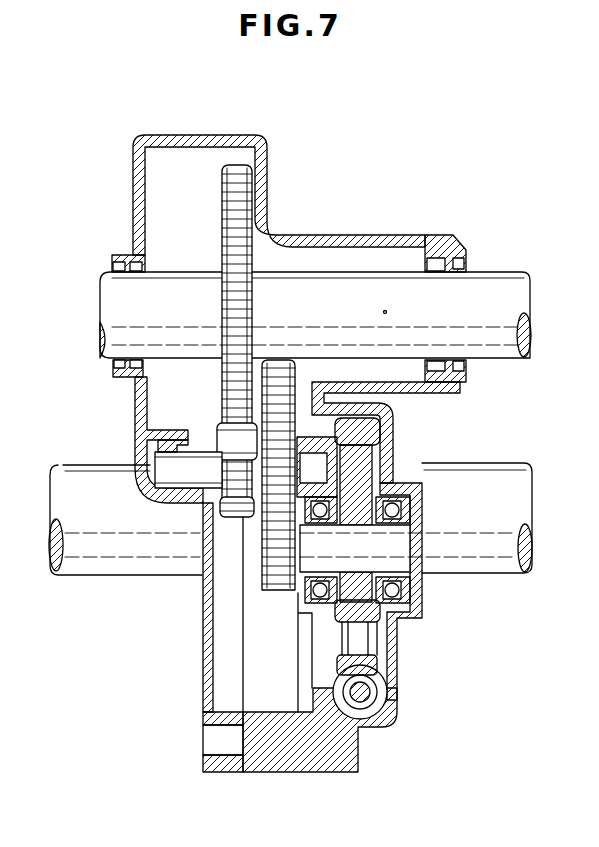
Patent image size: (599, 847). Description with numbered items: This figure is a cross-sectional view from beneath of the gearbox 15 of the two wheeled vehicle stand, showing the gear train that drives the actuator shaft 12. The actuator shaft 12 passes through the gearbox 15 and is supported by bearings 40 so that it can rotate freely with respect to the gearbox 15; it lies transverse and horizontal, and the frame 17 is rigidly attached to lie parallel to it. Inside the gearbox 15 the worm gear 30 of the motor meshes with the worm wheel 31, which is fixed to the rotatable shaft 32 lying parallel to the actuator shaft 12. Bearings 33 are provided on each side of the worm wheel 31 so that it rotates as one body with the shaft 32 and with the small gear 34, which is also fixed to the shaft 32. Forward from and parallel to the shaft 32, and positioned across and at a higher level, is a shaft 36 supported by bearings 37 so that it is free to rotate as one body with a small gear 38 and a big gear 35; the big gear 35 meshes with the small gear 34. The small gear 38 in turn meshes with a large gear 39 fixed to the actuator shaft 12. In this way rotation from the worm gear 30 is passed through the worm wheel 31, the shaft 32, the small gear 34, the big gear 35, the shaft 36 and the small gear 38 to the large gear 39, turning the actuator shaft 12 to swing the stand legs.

The actuator shaft 12 is at (351, 290).
The gearbox 15 is at (214, 135).
The frame 17 is at (500, 463).
The worm gear 30 is at (372, 705).
The worm wheel 31 is at (365, 663).
The rotatable shaft 32 is at (397, 553).
The bearings 33 is at (398, 500).
The small gear 34 is at (263, 567).
The big gear 35 is at (292, 368).
The shaft 36 is at (203, 465).
The bearings 37 is at (174, 440).
The small gear 38 is at (233, 520).
The large gear 39 is at (222, 225).
The bearings 40 is at (126, 255).